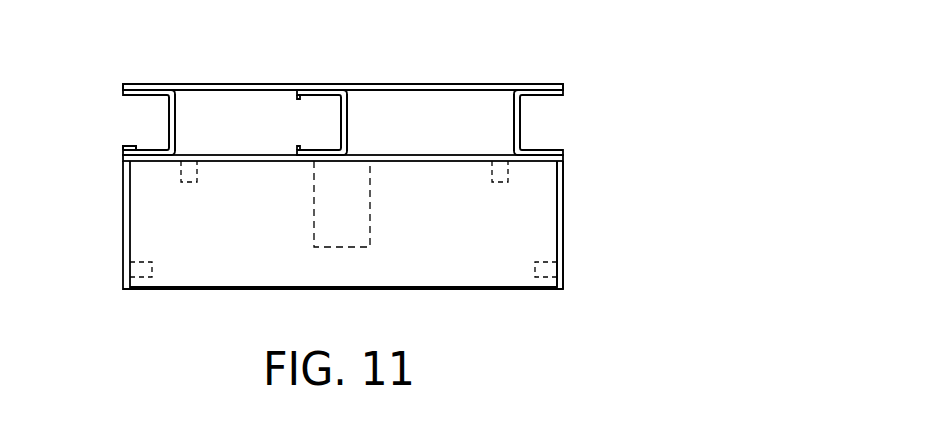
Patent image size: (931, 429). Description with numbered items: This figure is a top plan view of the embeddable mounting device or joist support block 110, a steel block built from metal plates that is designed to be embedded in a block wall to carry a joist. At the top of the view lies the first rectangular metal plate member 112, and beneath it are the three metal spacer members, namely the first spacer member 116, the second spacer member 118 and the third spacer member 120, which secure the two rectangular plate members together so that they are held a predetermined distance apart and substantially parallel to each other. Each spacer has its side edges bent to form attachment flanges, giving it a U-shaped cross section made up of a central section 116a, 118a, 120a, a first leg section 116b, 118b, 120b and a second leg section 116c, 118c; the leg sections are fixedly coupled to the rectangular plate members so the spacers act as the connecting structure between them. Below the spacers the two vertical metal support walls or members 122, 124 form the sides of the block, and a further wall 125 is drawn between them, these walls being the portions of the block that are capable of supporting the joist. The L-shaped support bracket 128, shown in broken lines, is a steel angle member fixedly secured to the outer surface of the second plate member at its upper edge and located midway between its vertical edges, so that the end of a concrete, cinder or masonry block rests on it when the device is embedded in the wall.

The embeddable mounting device or joist support block 110 is at (86, 72).
The first rectangular metal plate member 112 is at (230, 88).
The first spacer member 116 is at (167, 130).
The central section of first spacer member 116a is at (175, 118).
The first leg section of first spacer member 116b is at (155, 90).
The second leg section of first spacer member 116c is at (133, 147).
The second spacer member 118 is at (340, 130).
The central section of second spacer member 118a is at (348, 118).
The first leg section of second spacer member 118b is at (322, 88).
The second leg section of second spacer member 118c is at (312, 152).
The third spacer member 120 is at (513, 128).
The central section of third spacer member 120a is at (520, 120).
The first leg section of third spacer member 120b is at (547, 88).
The vertical metal support wall or member 122 is at (127, 208).
The vertical metal support wall or member 124 is at (560, 237).
The bottom wall 125 is at (432, 257).
The L-shaped support bracket 128 is at (343, 230).